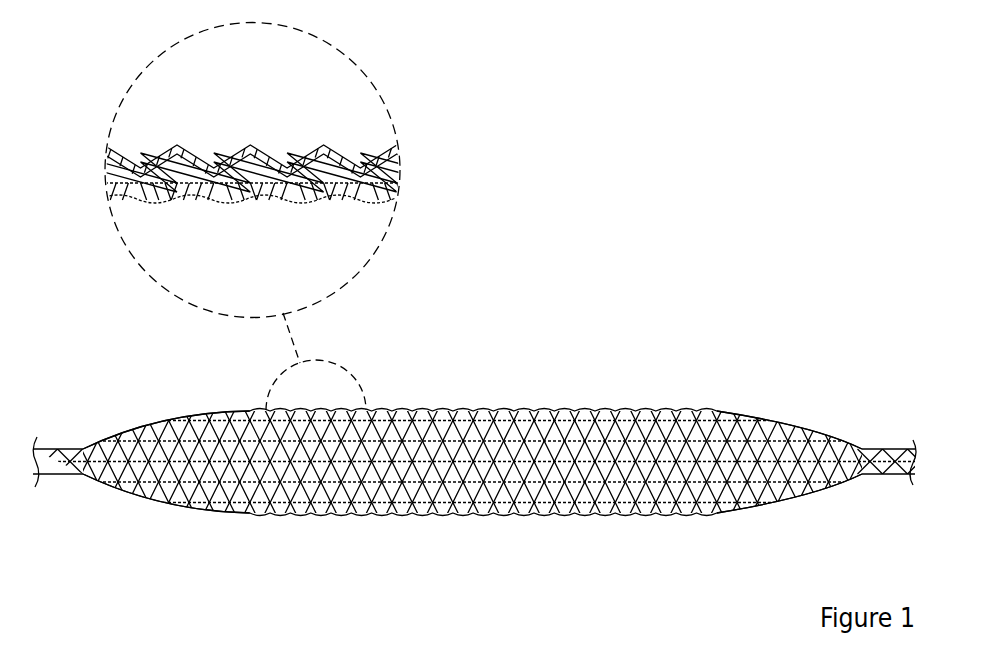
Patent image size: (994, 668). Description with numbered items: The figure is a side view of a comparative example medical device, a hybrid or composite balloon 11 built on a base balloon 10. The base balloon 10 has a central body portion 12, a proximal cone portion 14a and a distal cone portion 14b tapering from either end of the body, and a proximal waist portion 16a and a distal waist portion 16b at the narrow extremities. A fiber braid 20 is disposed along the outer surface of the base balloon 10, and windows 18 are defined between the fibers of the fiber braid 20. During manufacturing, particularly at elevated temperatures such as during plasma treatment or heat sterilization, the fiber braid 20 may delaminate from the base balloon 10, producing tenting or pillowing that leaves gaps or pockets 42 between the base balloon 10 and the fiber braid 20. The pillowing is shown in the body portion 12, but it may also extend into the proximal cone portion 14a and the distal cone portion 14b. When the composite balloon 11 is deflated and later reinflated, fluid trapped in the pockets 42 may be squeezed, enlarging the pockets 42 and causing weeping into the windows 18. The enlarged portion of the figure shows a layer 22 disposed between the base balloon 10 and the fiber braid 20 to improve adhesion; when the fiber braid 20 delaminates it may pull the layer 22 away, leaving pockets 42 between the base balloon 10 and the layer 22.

The base balloon 10 is at (415, 408).
The composite balloon 11 is at (478, 388).
The body portion 12 is at (562, 508).
The proximal cone portion 14a is at (193, 508).
The distal cone portion 14b is at (763, 421).
The proximal waist portion 16a is at (63, 474).
The distal waist portion 16b is at (893, 449).
The windows 18 is at (293, 410).
The fiber braid 20 is at (438, 514).
The layer 22 is at (331, 162).
The pockets 42 is at (161, 156).